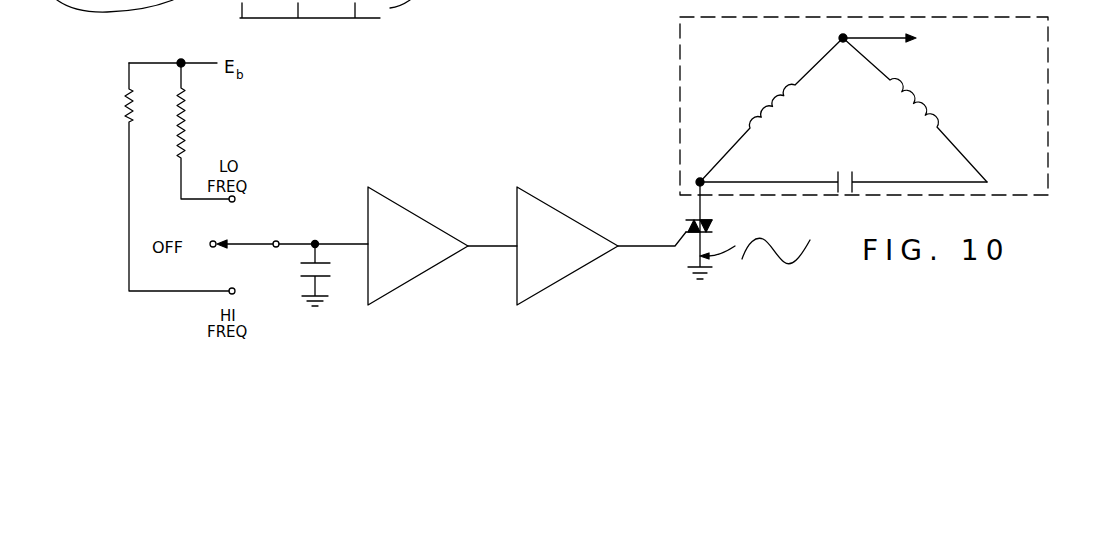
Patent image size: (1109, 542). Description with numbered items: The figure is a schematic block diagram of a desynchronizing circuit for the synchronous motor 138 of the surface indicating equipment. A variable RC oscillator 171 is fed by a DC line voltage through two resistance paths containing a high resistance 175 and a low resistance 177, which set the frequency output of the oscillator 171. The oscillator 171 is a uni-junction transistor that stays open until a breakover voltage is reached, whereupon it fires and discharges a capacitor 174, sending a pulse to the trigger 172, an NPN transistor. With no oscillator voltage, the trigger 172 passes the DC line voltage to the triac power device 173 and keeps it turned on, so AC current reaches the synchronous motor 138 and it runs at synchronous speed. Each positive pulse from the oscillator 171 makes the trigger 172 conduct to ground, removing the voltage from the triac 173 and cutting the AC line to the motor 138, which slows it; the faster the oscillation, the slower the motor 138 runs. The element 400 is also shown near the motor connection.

The synchronous motor 138 is at (1048, 78).
The variable oscillator 171 is at (395, 197).
The trigger 172 is at (568, 217).
The power device 173 is at (686, 222).
The capacitor 174 is at (305, 276).
The high resistance 175 is at (189, 118).
The low resistance 177 is at (124, 115).
The motor run capacitor line 400 is at (843, 195).